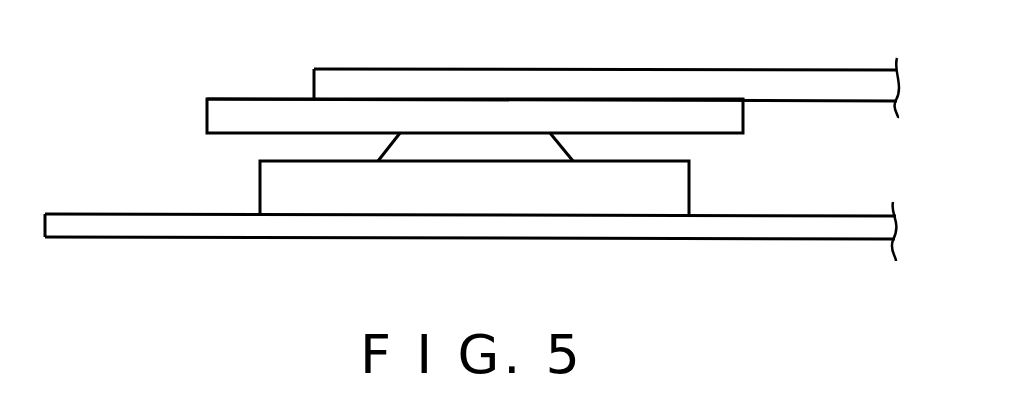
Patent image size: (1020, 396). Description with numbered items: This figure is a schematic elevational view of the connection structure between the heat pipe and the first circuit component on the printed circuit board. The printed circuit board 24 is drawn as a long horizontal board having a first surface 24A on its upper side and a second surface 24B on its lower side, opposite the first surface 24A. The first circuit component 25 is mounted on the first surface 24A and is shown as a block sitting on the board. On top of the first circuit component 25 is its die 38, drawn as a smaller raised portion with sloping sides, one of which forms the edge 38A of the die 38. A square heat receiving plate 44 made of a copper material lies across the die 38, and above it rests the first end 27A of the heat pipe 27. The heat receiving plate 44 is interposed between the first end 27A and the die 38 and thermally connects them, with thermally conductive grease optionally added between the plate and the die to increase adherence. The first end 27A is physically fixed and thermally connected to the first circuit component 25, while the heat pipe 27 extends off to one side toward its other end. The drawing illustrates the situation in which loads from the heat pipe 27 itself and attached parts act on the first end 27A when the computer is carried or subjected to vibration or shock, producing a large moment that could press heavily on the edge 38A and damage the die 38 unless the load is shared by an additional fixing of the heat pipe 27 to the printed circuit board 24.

The printed circuit board 24 is at (470, 186).
The first surface 24A is at (92, 213).
The second surface 24B is at (91, 240).
The first circuit component 25 is at (502, 200).
The die 38 is at (494, 210).
The edge of the die 38A is at (552, 135).
The heat receiving plate 44 is at (273, 110).
The heat pipe 27 is at (553, 64).
The first end 27A is at (404, 80).